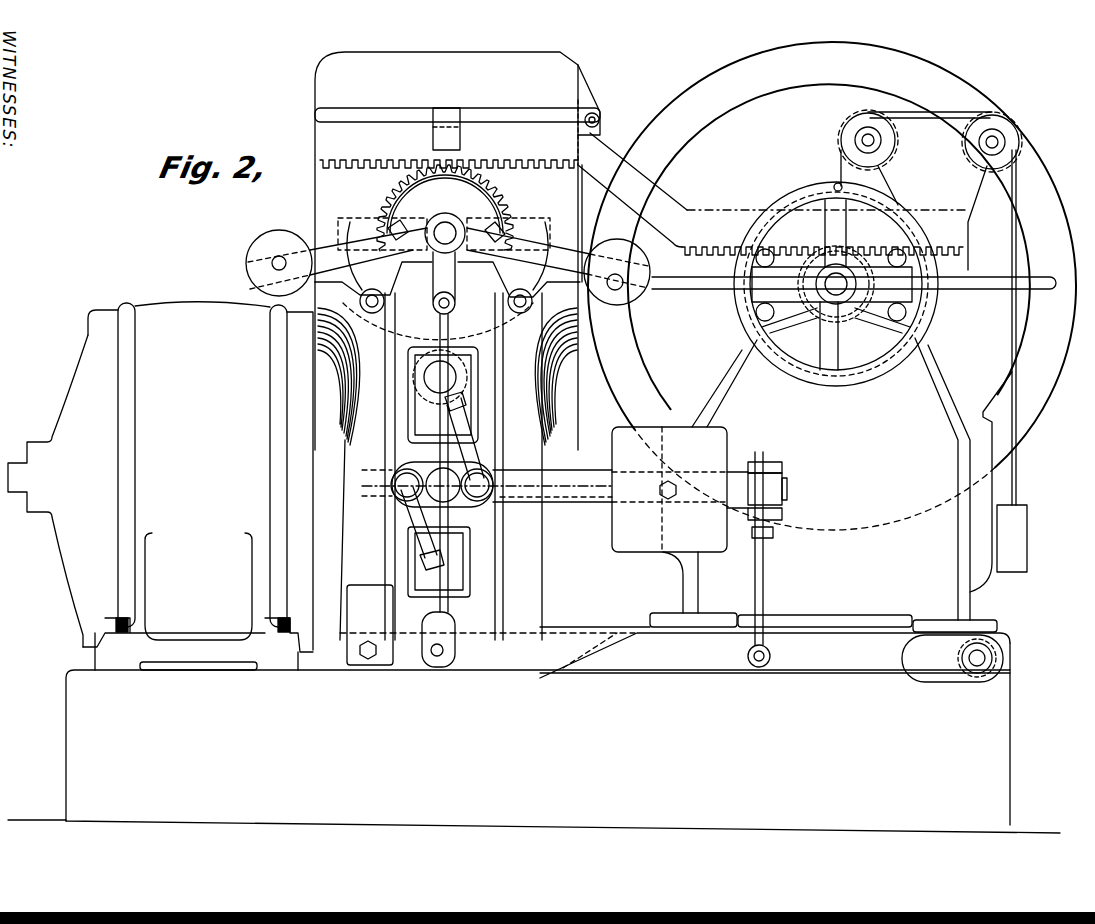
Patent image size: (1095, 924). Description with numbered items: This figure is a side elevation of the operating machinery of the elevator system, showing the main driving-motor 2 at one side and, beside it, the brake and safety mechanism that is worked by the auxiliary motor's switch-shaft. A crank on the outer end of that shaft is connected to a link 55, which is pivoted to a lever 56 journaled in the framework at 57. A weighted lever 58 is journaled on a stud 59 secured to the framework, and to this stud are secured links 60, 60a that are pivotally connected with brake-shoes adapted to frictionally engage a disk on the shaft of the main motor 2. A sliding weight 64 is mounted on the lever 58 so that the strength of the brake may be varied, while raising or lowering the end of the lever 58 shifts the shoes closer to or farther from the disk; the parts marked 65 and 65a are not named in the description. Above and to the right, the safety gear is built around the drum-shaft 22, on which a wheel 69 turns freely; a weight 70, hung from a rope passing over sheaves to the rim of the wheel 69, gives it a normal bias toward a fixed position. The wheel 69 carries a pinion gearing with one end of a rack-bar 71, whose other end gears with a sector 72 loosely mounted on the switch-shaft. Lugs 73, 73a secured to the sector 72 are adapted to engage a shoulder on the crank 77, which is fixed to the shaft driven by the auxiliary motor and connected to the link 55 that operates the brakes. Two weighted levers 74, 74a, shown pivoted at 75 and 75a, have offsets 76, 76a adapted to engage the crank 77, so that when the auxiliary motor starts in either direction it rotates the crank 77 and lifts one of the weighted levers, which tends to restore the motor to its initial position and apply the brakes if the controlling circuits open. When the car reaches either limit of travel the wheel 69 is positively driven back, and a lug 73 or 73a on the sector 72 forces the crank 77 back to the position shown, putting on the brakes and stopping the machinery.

The main driving-motor 2 is at (160, 486).
The drum-shaft 22 is at (857, 285).
The link 55 is at (488, 543).
The lever 56 is at (680, 660).
The framework journal 57 is at (952, 668).
The weighted lever 58 is at (588, 495).
The stud 59 is at (478, 497).
The link 60 is at (410, 515).
The link 60a is at (490, 450).
The sliding weight 64 is at (669, 520).
The adjusting nut 65 is at (787, 513).
The adjusting nut 65a is at (787, 467).
The wheel 69 is at (830, 386).
The weight 70 is at (1016, 560).
The rack-bar 71 is at (708, 224).
The sector 72 is at (445, 209).
The lug 73 is at (392, 222).
The lug 73a is at (500, 228).
The weighted lever 74 is at (323, 273).
The weighted lever 74a is at (560, 258).
The pivot pin 75 is at (370, 314).
The pivot pin 75a is at (520, 314).
The offset 76 is at (420, 270).
The offset 76a is at (480, 273).
The crank 77 is at (437, 298).